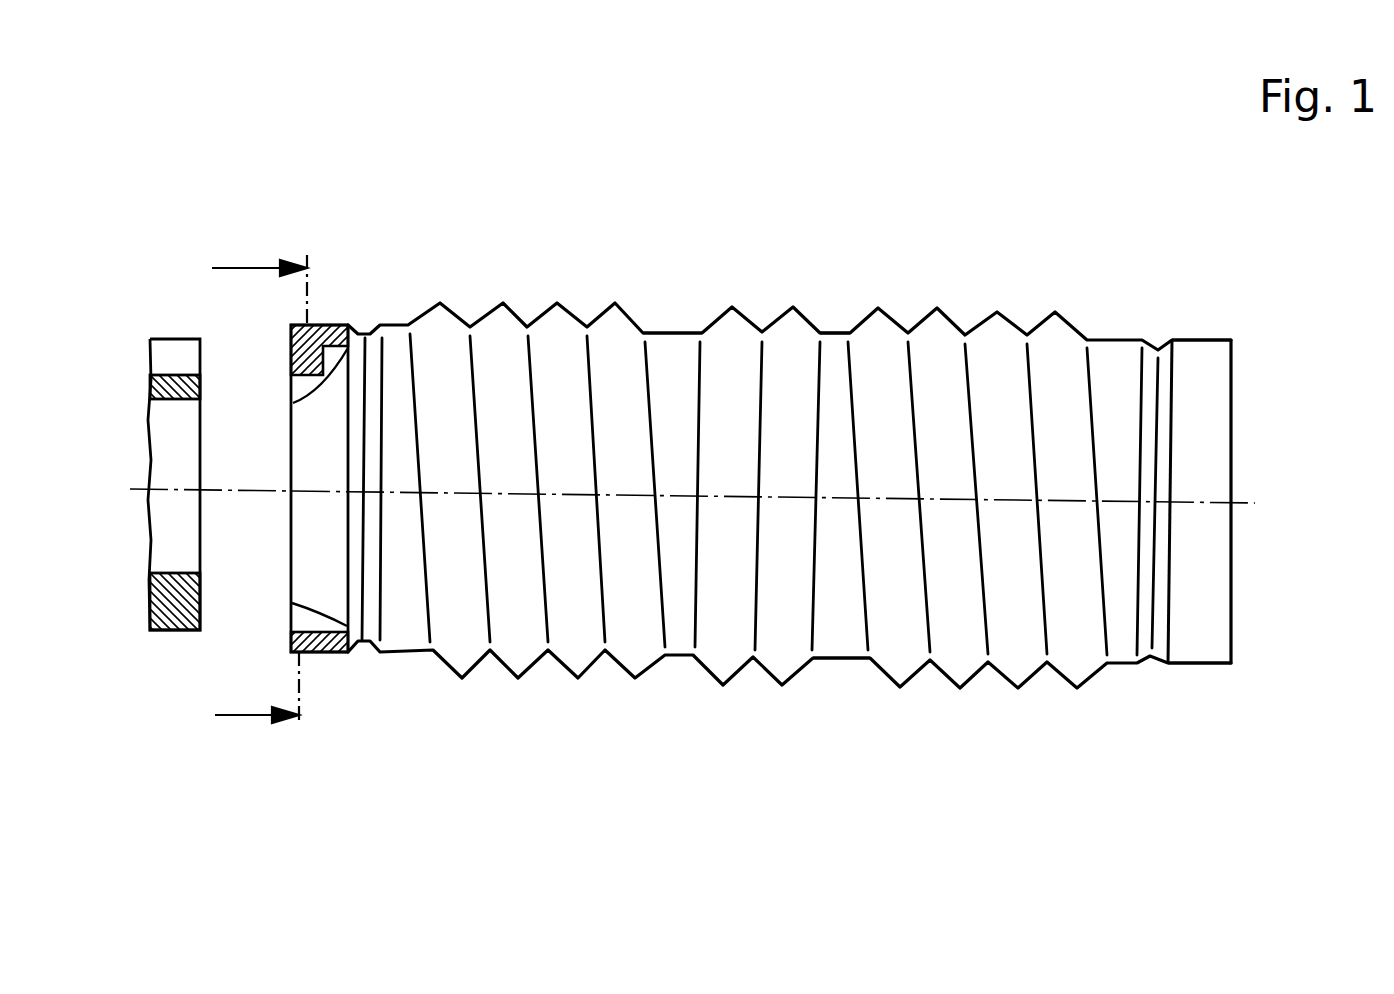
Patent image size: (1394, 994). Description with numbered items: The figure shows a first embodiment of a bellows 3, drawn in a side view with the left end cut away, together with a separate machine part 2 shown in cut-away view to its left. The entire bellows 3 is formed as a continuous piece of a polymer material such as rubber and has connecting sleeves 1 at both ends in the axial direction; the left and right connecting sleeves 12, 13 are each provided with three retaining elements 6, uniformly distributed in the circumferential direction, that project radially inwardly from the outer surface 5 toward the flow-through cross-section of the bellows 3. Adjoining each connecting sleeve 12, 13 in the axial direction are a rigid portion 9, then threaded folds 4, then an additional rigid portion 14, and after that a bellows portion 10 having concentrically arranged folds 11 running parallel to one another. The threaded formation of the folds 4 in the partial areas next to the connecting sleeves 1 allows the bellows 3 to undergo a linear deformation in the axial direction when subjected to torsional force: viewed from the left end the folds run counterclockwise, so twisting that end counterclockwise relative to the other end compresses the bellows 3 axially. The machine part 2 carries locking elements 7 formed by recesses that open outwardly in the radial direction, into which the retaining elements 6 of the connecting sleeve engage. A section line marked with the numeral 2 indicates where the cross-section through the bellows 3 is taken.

The connecting sleeve 1 is at (338, 328).
The machine part 2 is at (122, 782).
The bellows 3 is at (466, 148).
The threaded folds 4 is at (618, 317).
The outer surface 5 is at (325, 331).
The retaining element 6 is at (300, 347).
The locking element 7 is at (175, 348).
The rigid portion 9 is at (1112, 340).
The bellows portion 10 is at (778, 168).
The concentric folds 11 is at (728, 318).
The connecting sleeve 12 is at (333, 650).
The connecting sleeve 13 is at (1205, 378).
The additional rigid portion 14 is at (663, 332).